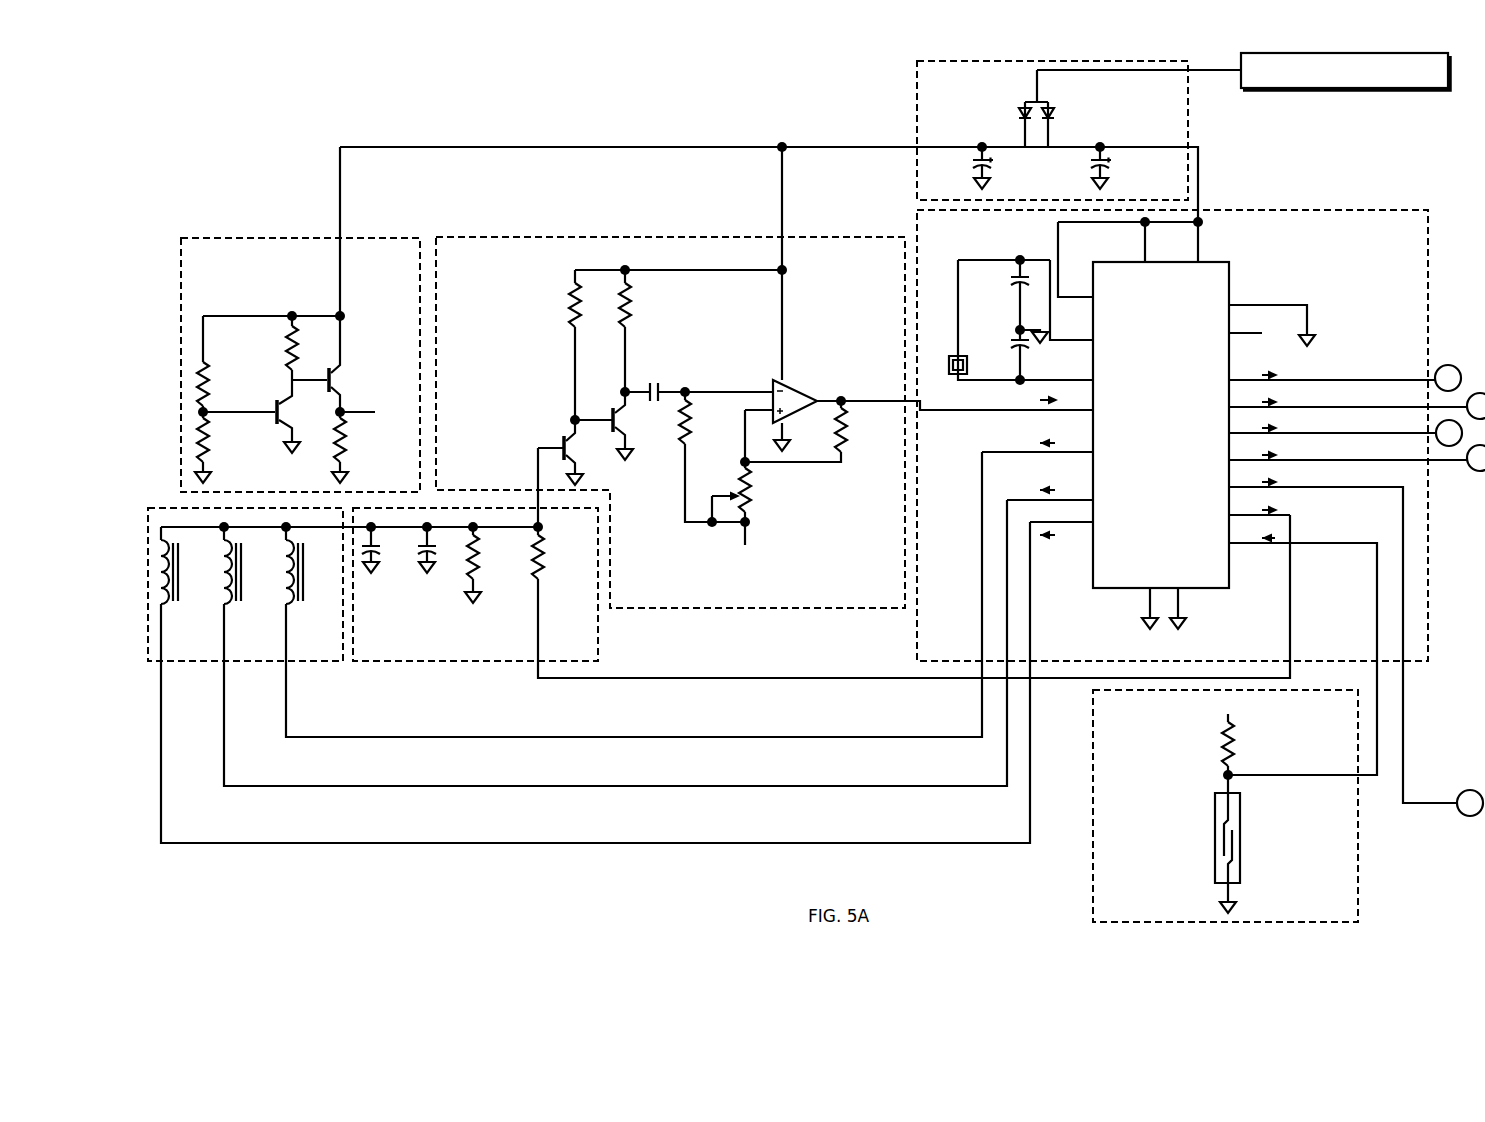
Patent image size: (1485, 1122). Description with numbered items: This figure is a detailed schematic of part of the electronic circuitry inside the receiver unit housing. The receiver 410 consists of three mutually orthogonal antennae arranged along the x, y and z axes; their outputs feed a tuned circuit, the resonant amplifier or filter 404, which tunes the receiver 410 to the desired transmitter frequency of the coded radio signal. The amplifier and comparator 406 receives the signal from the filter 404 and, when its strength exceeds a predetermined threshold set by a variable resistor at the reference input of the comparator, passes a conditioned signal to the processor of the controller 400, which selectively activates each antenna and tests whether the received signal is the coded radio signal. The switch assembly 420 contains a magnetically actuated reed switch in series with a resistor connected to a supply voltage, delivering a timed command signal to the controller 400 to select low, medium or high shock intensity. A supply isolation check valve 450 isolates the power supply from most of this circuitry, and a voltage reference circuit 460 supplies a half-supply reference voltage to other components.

The controller 400 is at (1285, 210).
The filter 404 is at (496, 662).
The amplifier and comparator 406 is at (566, 237).
The receiver 410 is at (318, 662).
The switch assembly 420 is at (1093, 893).
The supply isolation check valve 450 is at (917, 95).
The voltage reference circuit 460 is at (232, 238).